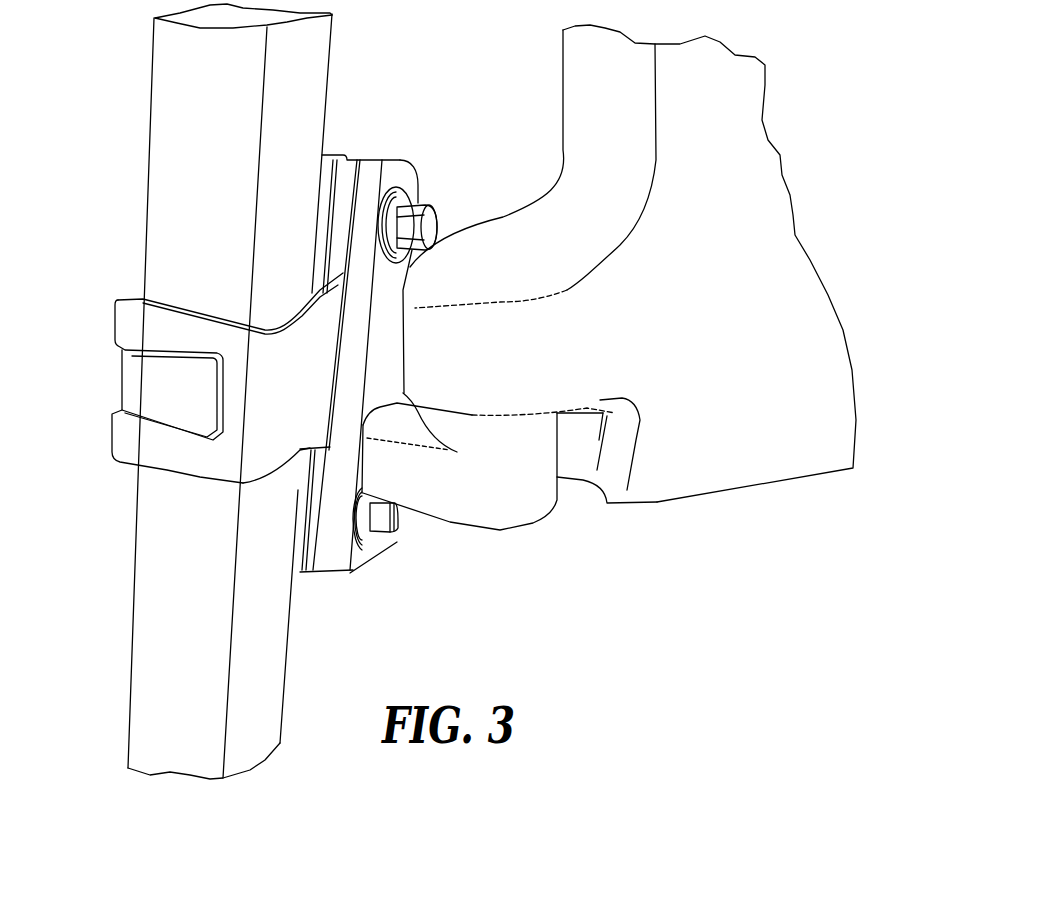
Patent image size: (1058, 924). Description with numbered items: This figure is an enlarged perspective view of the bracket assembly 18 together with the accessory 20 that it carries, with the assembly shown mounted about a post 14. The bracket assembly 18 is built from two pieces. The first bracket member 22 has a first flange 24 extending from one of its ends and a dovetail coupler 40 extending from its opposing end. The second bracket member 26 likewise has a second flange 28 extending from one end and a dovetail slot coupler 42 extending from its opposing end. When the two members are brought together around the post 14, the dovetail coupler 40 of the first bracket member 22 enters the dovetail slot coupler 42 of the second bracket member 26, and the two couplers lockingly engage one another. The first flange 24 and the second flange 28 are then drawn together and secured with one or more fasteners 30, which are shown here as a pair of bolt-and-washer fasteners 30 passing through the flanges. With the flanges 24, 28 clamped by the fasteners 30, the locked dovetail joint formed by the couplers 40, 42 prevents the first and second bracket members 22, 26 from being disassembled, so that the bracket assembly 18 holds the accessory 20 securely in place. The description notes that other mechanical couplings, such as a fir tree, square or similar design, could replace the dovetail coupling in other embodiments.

The post 14 is at (170, 612).
The bracket assembly 18 is at (76, 286).
The accessory 20 is at (495, 488).
The first bracket member 22 is at (138, 372).
The first flange 24 is at (356, 157).
The second bracket member 26 is at (270, 417).
The second flange 28 is at (407, 170).
The fastener 30 is at (435, 218).
The dovetail coupler 40 is at (170, 387).
The dovetail slot coupler 42 is at (165, 333).